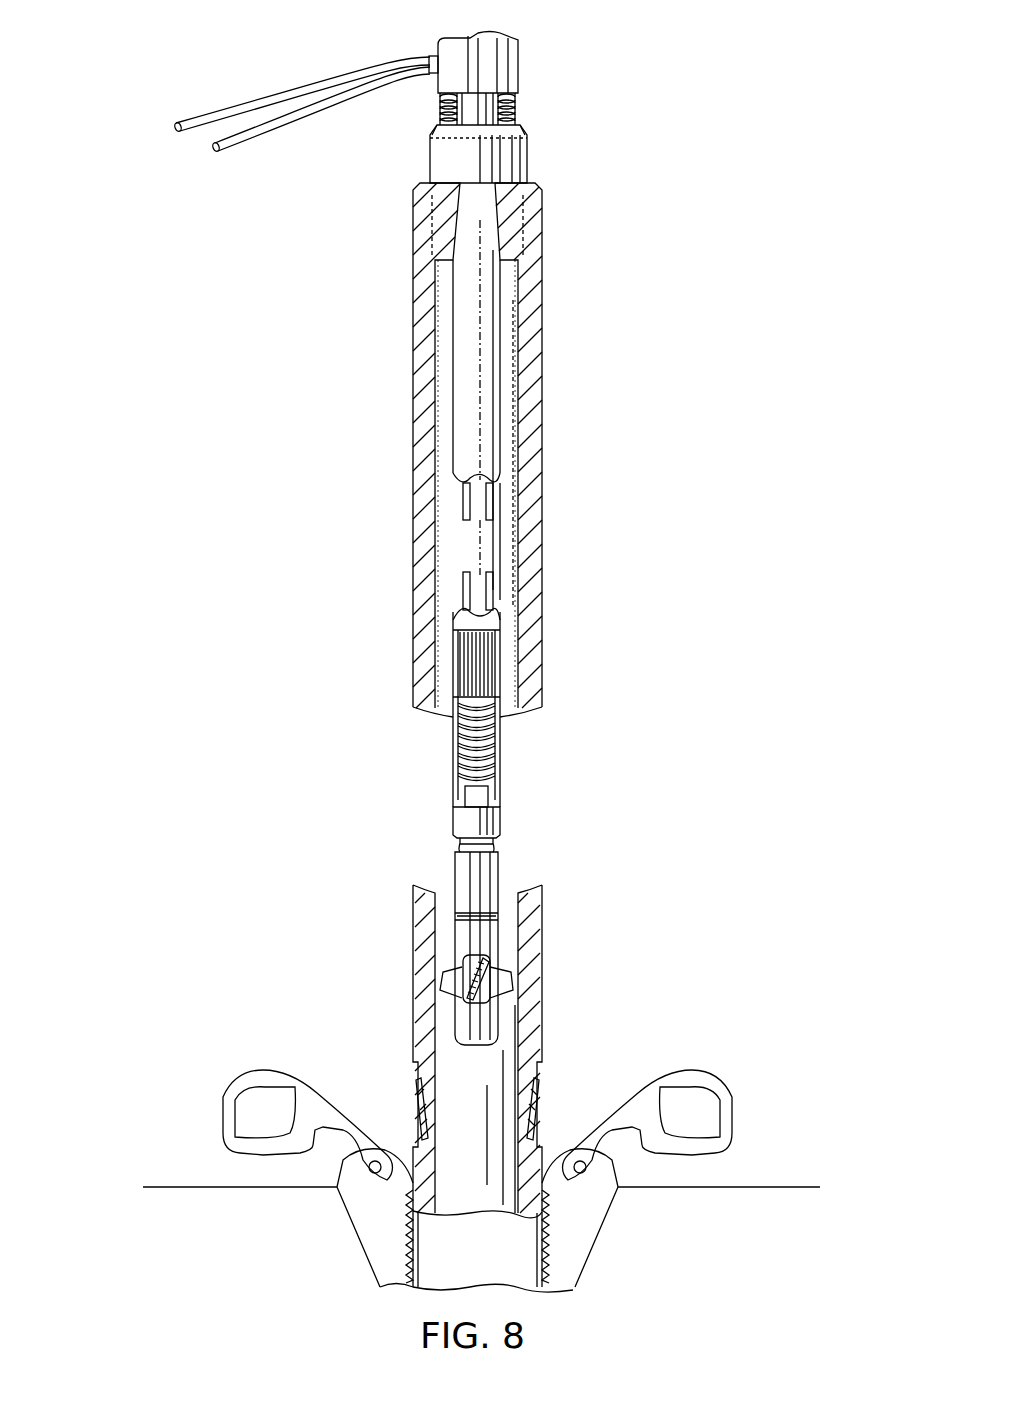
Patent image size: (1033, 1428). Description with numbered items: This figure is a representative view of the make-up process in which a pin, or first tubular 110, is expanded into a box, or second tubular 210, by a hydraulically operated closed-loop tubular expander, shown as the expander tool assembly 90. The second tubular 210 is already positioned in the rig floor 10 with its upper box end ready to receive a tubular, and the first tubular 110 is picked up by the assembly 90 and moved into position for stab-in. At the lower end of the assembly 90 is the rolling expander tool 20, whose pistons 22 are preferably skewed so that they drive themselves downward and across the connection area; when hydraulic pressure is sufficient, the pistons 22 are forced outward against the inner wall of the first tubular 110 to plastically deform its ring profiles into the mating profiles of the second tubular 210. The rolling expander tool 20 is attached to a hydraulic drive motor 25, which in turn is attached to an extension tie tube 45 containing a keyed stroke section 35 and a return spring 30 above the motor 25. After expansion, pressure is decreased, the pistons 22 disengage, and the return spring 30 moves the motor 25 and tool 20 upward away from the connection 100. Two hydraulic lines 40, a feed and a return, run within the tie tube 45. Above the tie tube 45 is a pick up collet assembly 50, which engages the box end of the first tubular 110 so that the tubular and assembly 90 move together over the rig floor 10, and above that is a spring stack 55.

The rig floor 10 is at (213, 1200).
The rolling expander tool 20 is at (500, 983).
The pistons 22 is at (468, 985).
The hydraulic drive motor 25 is at (495, 883).
The return spring 30 is at (500, 748).
The keyed stroke section 35 is at (500, 680).
The hydraulic lines 40 is at (303, 106).
The extension tie tube 45 is at (506, 378).
The pick up collet assembly 50 is at (500, 212).
The spring stack 55 is at (517, 110).
The expander tool assembly 90 is at (798, 458).
The connection 100 is at (415, 1090).
The first tubular 110 is at (428, 572).
The second tubular 210 is at (547, 1145).